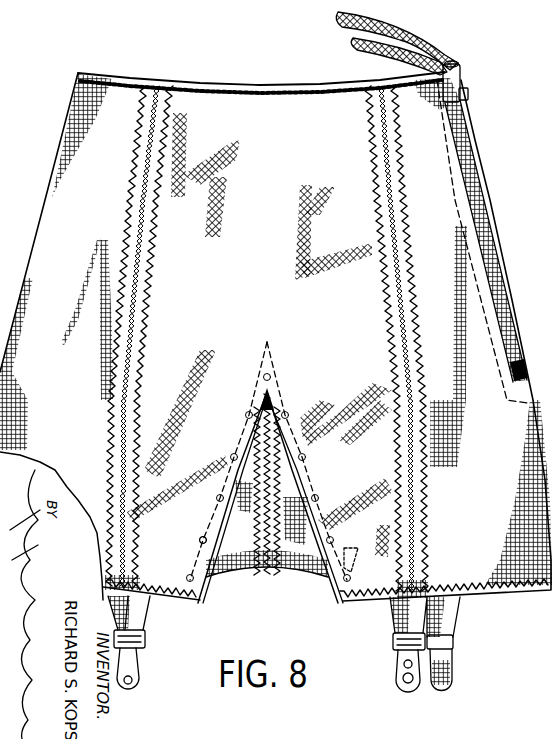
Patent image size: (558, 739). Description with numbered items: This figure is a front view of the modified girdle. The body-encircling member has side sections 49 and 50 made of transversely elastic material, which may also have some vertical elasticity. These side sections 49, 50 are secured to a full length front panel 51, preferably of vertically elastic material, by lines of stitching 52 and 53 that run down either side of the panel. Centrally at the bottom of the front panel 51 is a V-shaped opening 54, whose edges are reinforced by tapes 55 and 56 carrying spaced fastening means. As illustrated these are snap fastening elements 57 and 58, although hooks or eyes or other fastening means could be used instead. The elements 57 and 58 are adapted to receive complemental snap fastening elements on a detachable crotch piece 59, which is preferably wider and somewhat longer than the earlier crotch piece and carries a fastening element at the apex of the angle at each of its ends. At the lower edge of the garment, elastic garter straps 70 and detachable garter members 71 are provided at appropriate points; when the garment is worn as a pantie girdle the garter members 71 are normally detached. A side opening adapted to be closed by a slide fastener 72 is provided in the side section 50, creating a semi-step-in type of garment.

The side section 49 is at (80, 137).
The side section 50 is at (436, 203).
The full length front panel 51 is at (238, 100).
The line of stitching 52 is at (147, 250).
The line of stitching 53 is at (376, 163).
The V-shaped opening 54 is at (267, 578).
The tape 55 is at (252, 388).
The tape 56 is at (297, 420).
The snap fastening element 57 is at (203, 538).
The snap fastening element 58 is at (353, 552).
The detachable crotch piece 59 is at (240, 555).
The garter strap 70 is at (397, 610).
The detachable garter member 71 is at (398, 668).
The slide fastener 72 is at (503, 257).